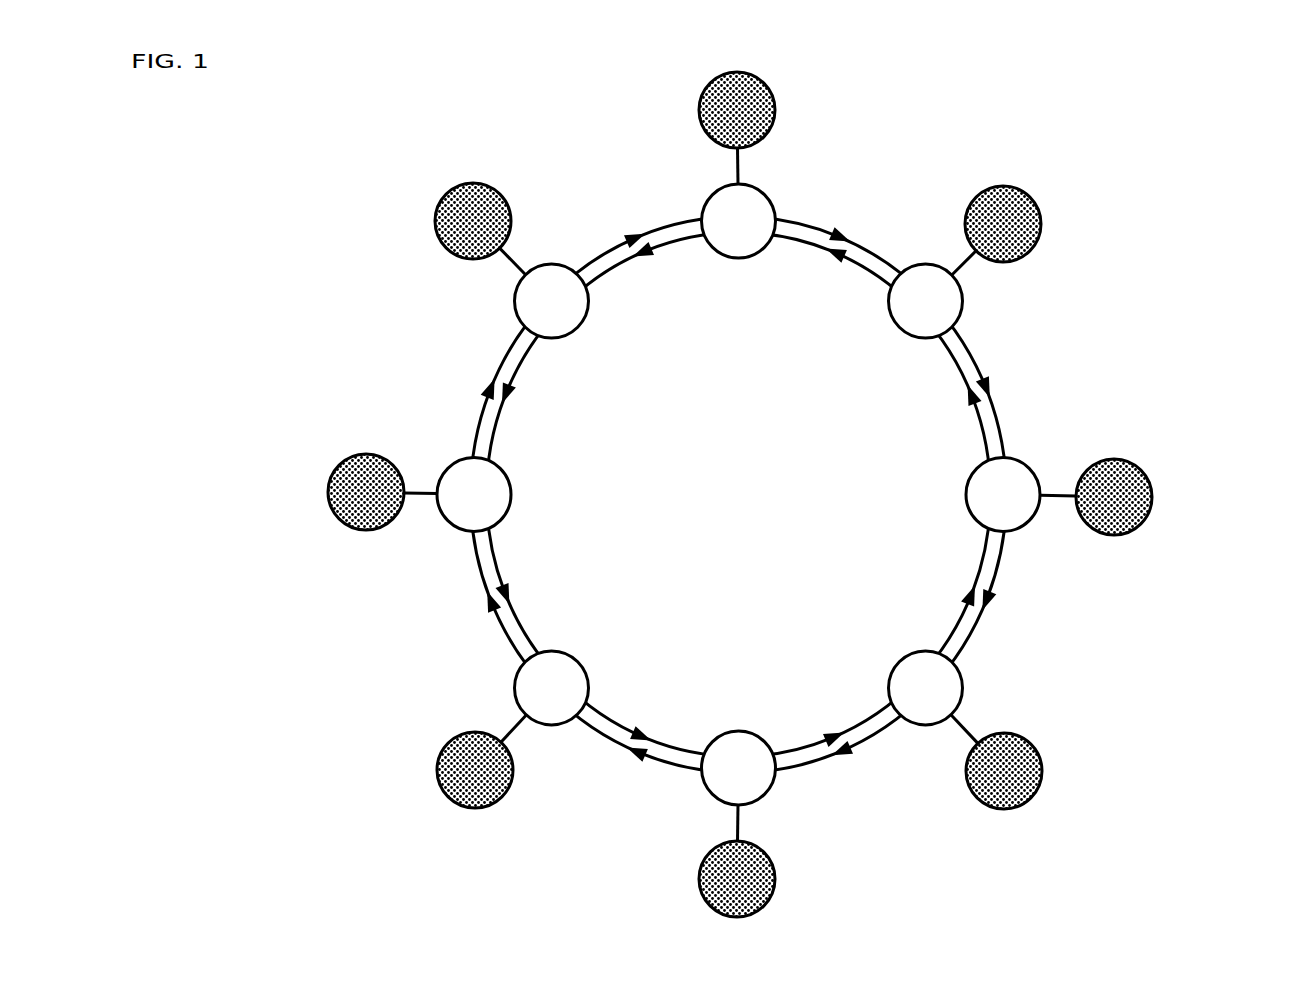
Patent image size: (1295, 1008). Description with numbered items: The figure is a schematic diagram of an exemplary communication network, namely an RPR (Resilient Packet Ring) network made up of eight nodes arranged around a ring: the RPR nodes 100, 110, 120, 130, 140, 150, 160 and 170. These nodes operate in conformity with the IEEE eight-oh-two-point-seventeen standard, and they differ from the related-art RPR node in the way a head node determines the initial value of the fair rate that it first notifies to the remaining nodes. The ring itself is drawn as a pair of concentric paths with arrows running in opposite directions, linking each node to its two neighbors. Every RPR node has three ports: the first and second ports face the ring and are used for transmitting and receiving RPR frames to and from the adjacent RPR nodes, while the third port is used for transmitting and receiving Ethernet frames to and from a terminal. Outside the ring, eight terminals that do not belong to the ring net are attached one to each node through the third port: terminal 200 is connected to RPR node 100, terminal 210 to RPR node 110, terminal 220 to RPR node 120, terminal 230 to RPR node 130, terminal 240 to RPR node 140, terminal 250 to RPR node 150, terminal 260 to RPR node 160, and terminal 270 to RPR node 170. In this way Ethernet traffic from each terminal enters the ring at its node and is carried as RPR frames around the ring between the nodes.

The RPR node 100 is at (737, 258).
The RPR node 110 is at (896, 331).
The RPR node 120 is at (966, 495).
The RPR node 130 is at (893, 656).
The RPR node 140 is at (737, 731).
The RPR node 150 is at (580, 660).
The RPR node 160 is at (511, 493).
The RPR node 170 is at (580, 333).
The terminal 200 is at (775, 112).
The terminal 210 is at (1043, 226).
The terminal 220 is at (1154, 496).
The terminal 230 is at (1043, 771).
The terminal 240 is at (698, 879).
The terminal 250 is at (437, 770).
The terminal 260 is at (329, 492).
The terminal 270 is at (434, 221).